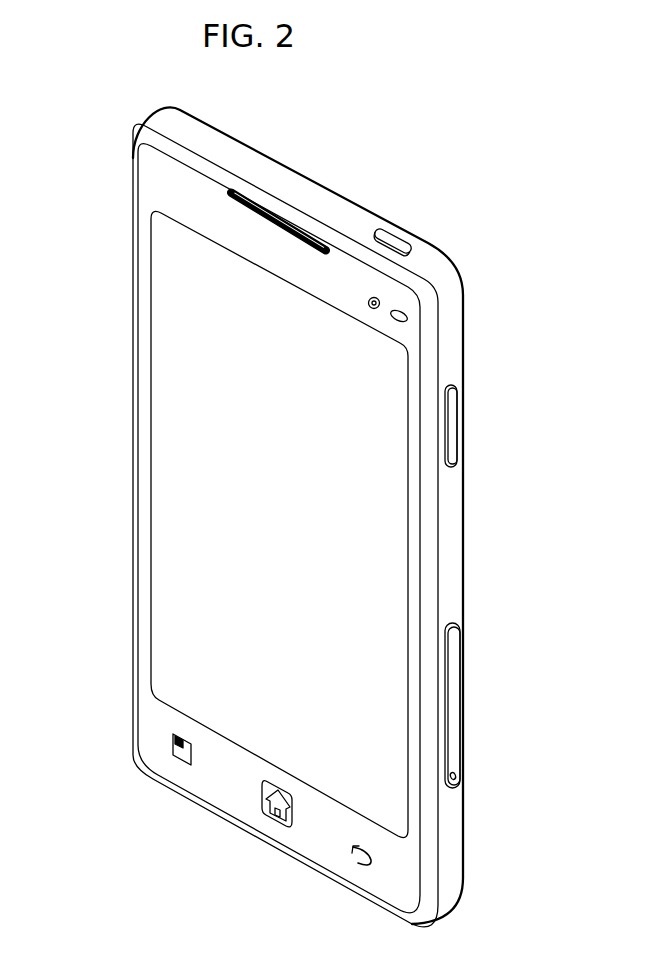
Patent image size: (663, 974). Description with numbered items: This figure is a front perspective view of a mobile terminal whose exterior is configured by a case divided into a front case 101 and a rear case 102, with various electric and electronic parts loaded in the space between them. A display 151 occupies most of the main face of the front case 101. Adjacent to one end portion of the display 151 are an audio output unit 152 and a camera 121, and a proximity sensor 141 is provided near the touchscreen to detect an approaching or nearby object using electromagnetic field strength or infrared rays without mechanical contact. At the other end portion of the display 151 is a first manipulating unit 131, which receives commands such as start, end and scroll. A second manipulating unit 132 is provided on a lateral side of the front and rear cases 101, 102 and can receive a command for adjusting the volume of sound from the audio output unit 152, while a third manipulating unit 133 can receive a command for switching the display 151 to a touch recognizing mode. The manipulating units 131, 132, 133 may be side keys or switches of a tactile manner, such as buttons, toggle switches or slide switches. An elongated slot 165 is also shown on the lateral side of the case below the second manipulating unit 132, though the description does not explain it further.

The front case 101 is at (427, 875).
The rear case 102 is at (450, 292).
The camera 121 is at (383, 301).
The first manipulating unit 131 is at (268, 812).
The second manipulating unit 132 is at (455, 425).
The third manipulating unit 133 is at (393, 242).
The proximity sensor 141 is at (407, 319).
The display 151 is at (167, 485).
The audio output unit 152 is at (273, 217).
The side slot 165 is at (453, 708).